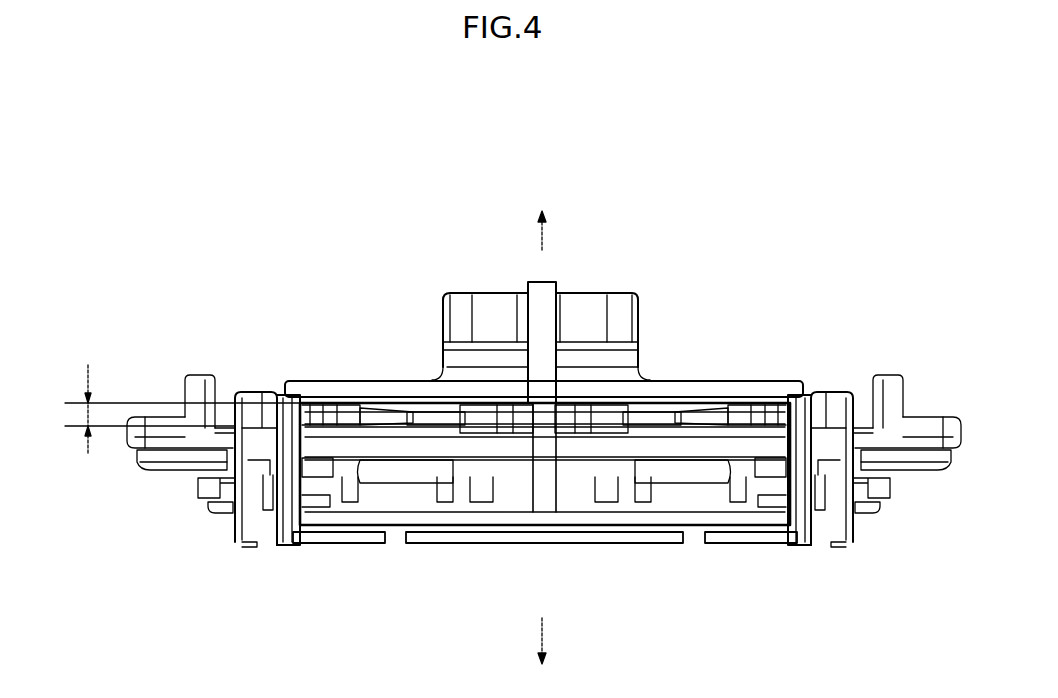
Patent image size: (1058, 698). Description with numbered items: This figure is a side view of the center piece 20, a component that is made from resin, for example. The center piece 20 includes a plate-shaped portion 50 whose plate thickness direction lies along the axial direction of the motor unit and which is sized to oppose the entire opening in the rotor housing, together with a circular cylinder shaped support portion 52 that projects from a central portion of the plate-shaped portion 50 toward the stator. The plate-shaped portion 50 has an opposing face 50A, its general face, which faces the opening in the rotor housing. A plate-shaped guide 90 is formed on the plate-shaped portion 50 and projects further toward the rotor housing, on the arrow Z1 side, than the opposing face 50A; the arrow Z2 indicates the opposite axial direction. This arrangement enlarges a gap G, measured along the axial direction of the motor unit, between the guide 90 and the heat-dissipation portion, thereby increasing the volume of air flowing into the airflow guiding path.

The center piece 20 is at (703, 236).
The plate-shaped portion 50 is at (335, 405).
The opposing face 50A is at (655, 407).
The support portion 52 is at (443, 313).
The guide 90 is at (375, 383).
The gap G is at (88, 372).
The arrow Z1 direction Z1 is at (545, 230).
The arrow Z2 direction Z2 is at (545, 628).